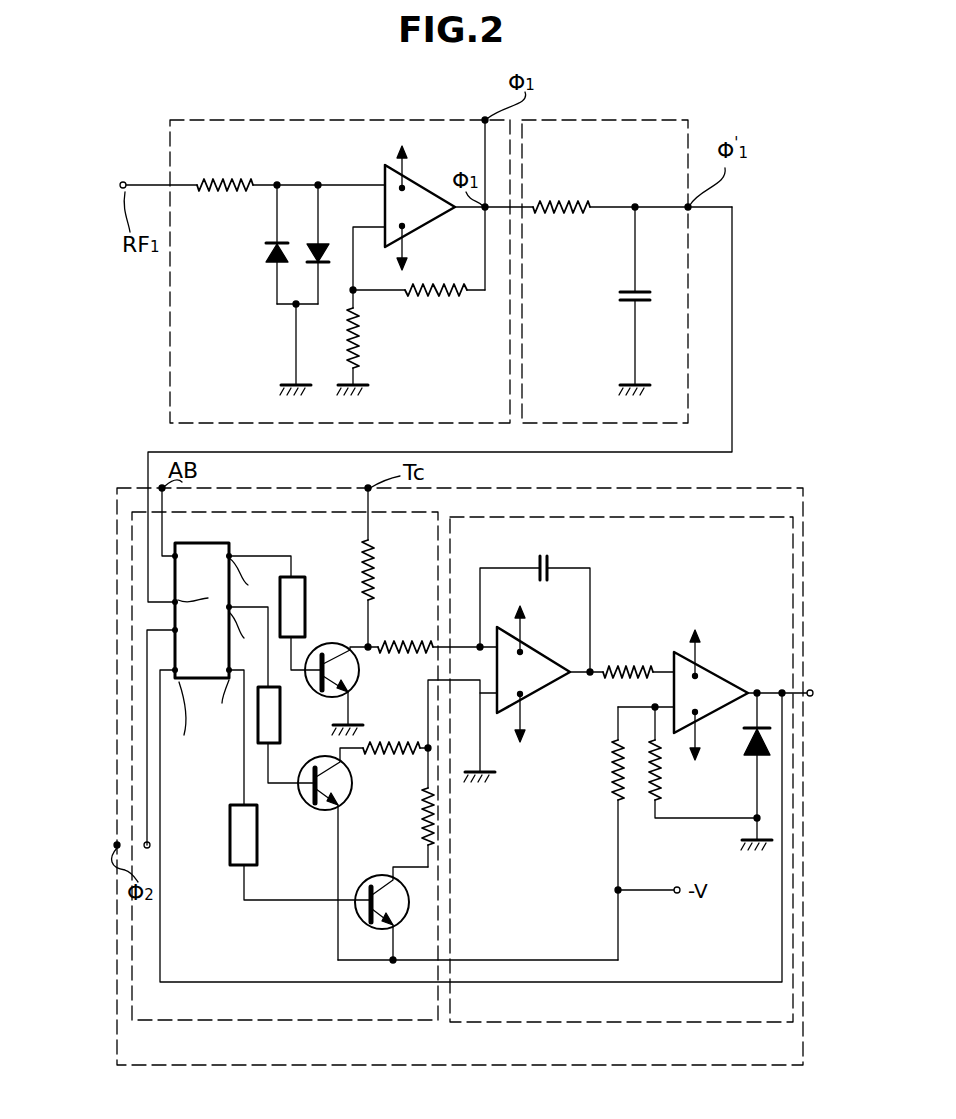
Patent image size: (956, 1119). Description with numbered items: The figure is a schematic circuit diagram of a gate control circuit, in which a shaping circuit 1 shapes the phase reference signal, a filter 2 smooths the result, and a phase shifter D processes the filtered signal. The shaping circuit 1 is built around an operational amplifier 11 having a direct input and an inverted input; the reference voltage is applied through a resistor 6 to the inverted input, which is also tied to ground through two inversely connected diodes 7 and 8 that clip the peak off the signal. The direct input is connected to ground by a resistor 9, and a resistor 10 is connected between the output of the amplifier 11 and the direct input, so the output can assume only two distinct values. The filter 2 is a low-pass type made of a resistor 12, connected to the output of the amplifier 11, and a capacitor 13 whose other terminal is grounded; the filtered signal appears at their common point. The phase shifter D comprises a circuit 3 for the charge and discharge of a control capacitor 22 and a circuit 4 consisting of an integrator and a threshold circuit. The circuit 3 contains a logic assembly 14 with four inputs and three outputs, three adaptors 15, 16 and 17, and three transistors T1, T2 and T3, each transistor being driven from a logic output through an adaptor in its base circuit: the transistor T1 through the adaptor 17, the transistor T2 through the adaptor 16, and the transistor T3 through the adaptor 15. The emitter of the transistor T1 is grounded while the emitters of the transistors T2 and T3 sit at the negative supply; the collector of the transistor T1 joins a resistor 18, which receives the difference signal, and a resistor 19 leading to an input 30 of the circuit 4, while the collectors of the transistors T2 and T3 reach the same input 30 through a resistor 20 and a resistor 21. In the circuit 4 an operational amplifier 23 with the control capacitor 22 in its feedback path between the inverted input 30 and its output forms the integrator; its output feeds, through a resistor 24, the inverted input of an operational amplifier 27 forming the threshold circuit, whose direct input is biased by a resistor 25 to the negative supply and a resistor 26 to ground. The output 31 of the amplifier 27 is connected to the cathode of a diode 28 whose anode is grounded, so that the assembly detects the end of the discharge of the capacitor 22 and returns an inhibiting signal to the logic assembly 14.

The shaping circuit 1 is at (305, 128).
The filter 2 is at (640, 133).
The circuit for the charge and discharge of the control capacitor 3 is at (298, 1007).
The integrator and threshold circuit 4 is at (558, 1010).
The phase shifter D is at (425, 1058).
The resistor 6 is at (238, 180).
The diode 7 is at (266, 259).
The diode 8 is at (323, 243).
The resistor 9 is at (360, 338).
The resistor 10 is at (430, 300).
The operational amplifier 11 is at (427, 225).
The resistor 12 is at (578, 200).
The capacitor 13 is at (620, 297).
The logic assembly 14 is at (210, 550).
The adaptor 15 is at (232, 840).
The adaptor 16 is at (272, 720).
The adaptor 17 is at (295, 596).
The resistor 18 is at (375, 575).
The resistor 19 is at (425, 645).
The resistor 20 is at (415, 740).
The resistor 21 is at (422, 838).
The control capacitor 22 is at (548, 558).
The operational amplifier 23 is at (542, 678).
The resistor 24 is at (630, 664).
The resistor 25 is at (610, 766).
The resistor 26 is at (685, 772).
The operational amplifier 27 is at (722, 688).
The diode 28 is at (755, 760).
The input 30 is at (478, 643).
The output 31 is at (782, 690).
The transistor T1 is at (336, 662).
The transistor T2 is at (308, 822).
The transistor T3 is at (384, 882).